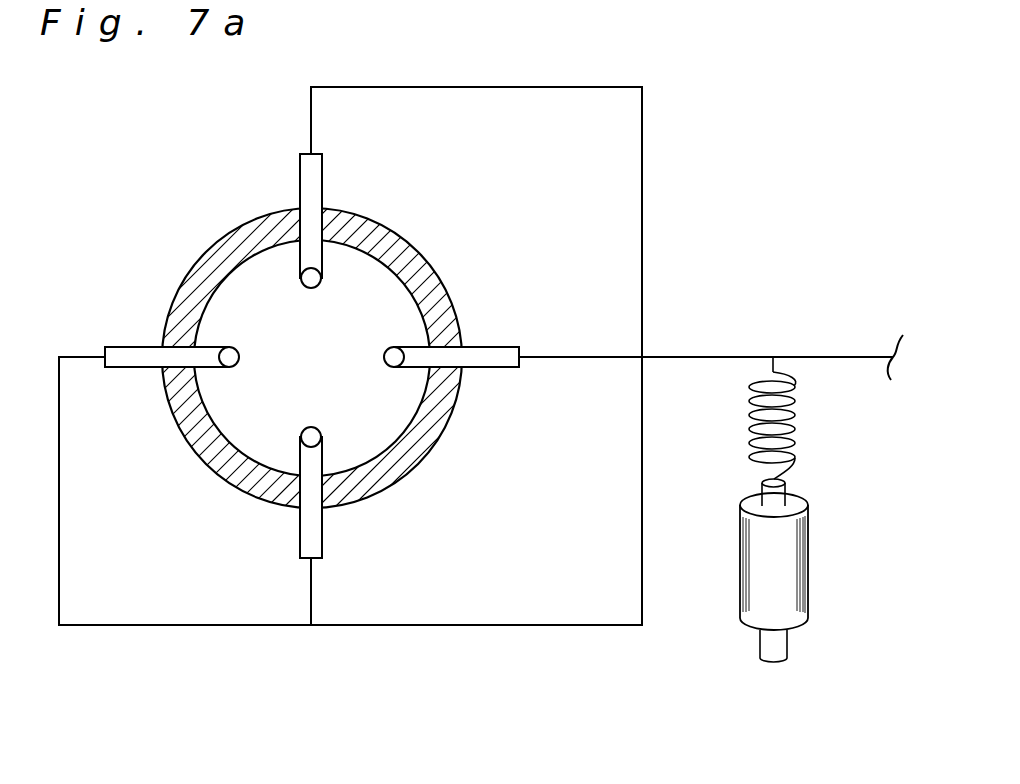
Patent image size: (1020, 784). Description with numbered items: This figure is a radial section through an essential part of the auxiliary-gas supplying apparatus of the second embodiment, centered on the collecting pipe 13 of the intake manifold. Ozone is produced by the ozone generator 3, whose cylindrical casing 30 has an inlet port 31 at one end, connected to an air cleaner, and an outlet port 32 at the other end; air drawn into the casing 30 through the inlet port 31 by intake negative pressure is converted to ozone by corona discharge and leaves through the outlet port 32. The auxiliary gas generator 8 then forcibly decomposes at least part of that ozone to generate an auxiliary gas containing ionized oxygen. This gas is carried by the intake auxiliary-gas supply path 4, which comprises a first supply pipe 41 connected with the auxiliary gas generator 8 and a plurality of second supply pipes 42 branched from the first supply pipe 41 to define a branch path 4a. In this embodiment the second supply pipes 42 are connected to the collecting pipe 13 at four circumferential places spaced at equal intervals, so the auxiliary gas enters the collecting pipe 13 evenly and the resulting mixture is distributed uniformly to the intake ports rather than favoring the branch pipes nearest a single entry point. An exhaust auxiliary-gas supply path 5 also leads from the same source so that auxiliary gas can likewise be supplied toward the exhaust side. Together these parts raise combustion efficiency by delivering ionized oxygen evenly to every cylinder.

The collecting pipe 13 is at (437, 272).
The second supply pipes 42 is at (312, 125).
The branch path 4a is at (660, 178).
The first supply pipe 41 is at (672, 357).
The intake auxiliary-gas supply path 4 is at (750, 348).
The exhaust auxiliary-gas supply path 5 is at (856, 348).
The auxiliary gas generator 8 is at (794, 420).
The ozone generator 3 is at (774, 584).
The cylindrical casing 30 is at (788, 553).
The inlet port 31 is at (772, 652).
The outlet port 32 is at (768, 478).